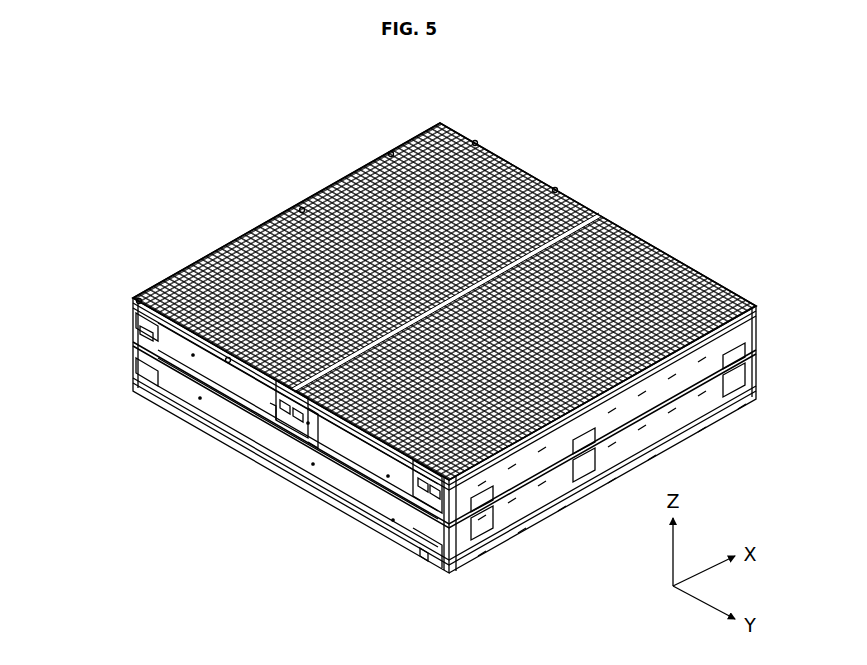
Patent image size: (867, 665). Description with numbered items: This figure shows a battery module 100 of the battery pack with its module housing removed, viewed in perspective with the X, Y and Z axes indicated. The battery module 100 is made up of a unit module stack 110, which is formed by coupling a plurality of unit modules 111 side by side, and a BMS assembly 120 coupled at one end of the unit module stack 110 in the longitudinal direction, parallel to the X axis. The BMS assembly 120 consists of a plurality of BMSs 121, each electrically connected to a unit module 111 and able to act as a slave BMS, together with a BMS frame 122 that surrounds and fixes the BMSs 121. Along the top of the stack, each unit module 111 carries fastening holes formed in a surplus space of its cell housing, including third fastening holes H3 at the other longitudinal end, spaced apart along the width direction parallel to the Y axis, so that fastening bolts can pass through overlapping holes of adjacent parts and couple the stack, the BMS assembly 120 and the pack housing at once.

The battery module 100 is at (403, 342).
The unit module stack 110 is at (444, 326).
The unit module 111 is at (217, 242).
The BMS assembly 120 is at (403, 429).
The BMS 121 is at (188, 403).
The BMS frame 122 is at (280, 402).
The third fastening hole H3 is at (466, 134).